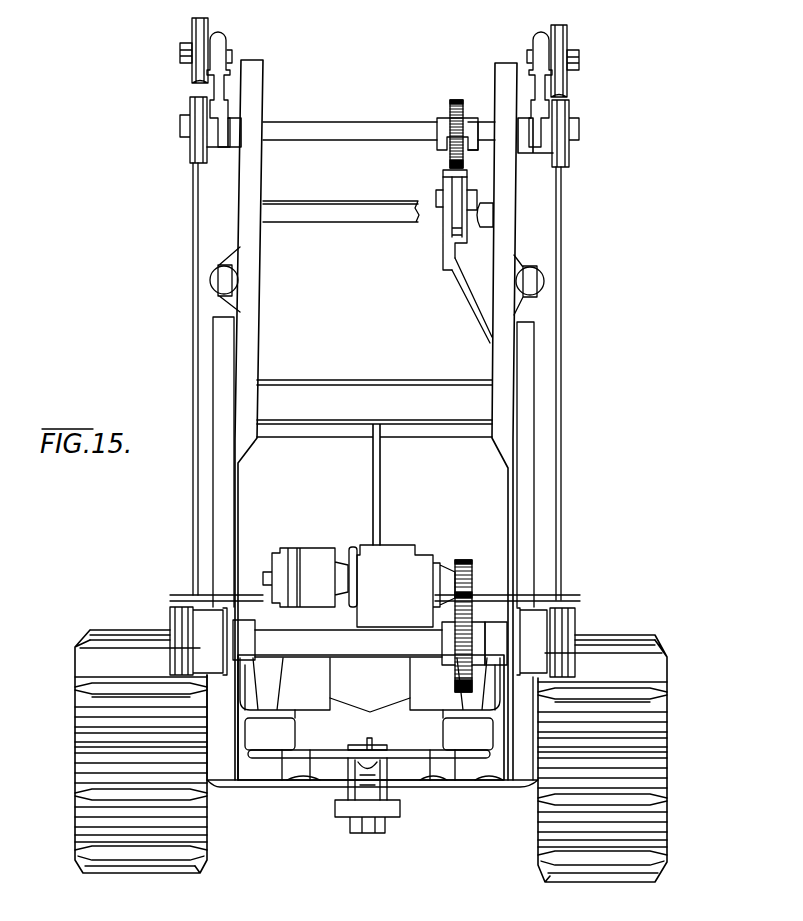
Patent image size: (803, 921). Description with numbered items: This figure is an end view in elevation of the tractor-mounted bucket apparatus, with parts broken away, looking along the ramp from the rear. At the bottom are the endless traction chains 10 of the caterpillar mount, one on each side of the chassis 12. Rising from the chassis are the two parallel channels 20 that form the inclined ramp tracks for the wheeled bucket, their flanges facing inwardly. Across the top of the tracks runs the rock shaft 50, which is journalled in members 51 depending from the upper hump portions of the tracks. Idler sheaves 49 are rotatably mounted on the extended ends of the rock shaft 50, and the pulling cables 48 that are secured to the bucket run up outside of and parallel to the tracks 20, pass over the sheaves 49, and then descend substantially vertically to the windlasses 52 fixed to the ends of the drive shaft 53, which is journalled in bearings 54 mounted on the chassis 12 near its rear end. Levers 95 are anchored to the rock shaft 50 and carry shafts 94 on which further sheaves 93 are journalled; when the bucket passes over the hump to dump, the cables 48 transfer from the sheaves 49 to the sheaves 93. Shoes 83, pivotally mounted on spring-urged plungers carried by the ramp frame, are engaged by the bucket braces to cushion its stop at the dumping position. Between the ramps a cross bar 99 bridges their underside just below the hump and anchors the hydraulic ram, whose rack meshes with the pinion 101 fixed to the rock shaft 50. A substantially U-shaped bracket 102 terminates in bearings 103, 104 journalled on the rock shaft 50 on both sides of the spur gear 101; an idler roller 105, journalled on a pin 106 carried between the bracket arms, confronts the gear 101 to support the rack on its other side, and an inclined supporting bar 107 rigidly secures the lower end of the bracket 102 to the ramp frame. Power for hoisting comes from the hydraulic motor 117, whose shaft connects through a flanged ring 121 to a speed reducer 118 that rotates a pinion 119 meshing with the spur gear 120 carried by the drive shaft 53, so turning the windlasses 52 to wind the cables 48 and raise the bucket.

The endless traction chains 10 is at (100, 633).
The chassis 12 is at (430, 788).
The channels 20 is at (263, 172).
The pulling cables 48 is at (192, 395).
The sheaves 49 is at (190, 106).
The rock shaft 50 is at (376, 130).
The members 51 is at (232, 150).
The windlasses 52 is at (205, 625).
The drive shaft 53 is at (328, 655).
The bearings 54 is at (246, 635).
The shoes 83 is at (232, 280).
The sheaves 93 is at (192, 30).
The shafts 94 is at (180, 53).
The levers 95 is at (216, 97).
The cross bar 99 is at (318, 210).
The pinion 101 is at (458, 100).
The U-shaped bracket 102 is at (437, 176).
The bearing 103 is at (445, 120).
The bearing 104 is at (470, 118).
The idler roller 105 is at (456, 215).
The pin 106 is at (440, 200).
The inclined supporting bar 107 is at (466, 306).
The hydraulic motor 117 is at (310, 556).
The speed reducer 118 is at (388, 560).
The pinion 119 is at (462, 560).
The spur gear 120 is at (456, 686).
The flanged ring 121 is at (352, 553).